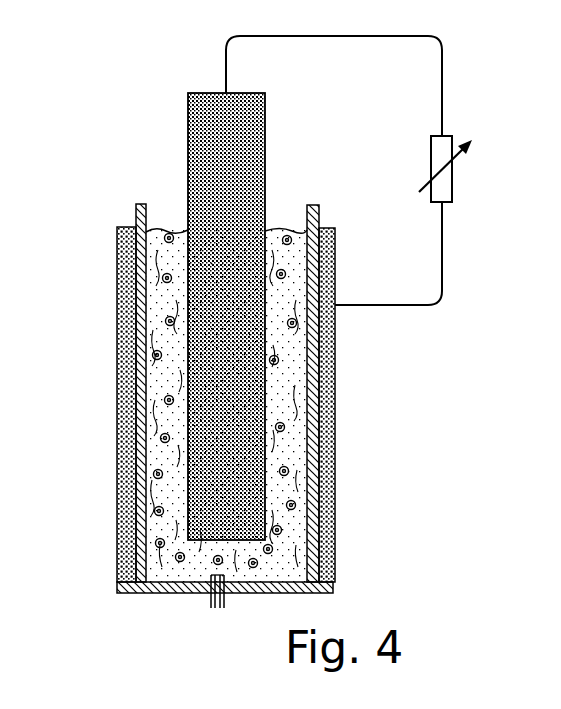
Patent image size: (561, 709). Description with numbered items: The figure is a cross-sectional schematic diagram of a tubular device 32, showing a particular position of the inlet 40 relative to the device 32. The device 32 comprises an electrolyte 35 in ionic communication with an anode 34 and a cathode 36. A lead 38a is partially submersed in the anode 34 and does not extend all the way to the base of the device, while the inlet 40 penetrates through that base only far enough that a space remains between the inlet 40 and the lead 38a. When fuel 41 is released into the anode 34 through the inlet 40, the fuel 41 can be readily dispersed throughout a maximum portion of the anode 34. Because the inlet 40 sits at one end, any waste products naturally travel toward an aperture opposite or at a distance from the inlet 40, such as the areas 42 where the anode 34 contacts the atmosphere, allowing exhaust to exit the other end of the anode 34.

The tubular device 32 is at (146, 92).
The anode 34 is at (298, 258).
The electrolyte 35 is at (137, 213).
The cathode 36 is at (117, 388).
The lead 38a is at (265, 108).
The inlet 40 is at (224, 597).
The fuel 41 is at (287, 471).
The areas in which anode contacts the atmosphere 42 is at (188, 206).